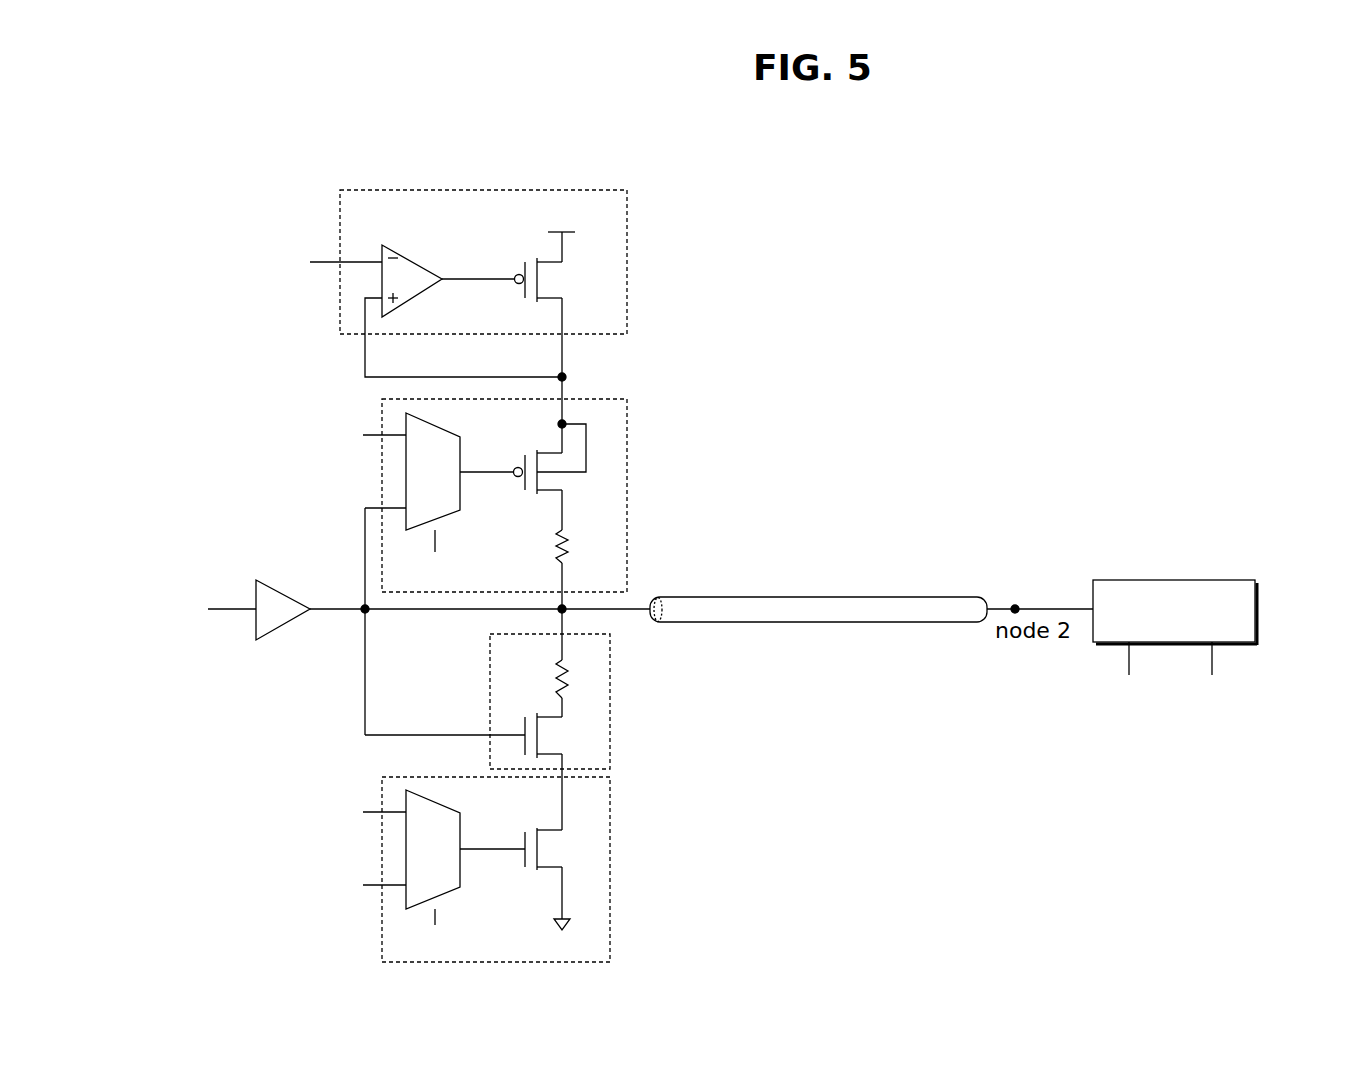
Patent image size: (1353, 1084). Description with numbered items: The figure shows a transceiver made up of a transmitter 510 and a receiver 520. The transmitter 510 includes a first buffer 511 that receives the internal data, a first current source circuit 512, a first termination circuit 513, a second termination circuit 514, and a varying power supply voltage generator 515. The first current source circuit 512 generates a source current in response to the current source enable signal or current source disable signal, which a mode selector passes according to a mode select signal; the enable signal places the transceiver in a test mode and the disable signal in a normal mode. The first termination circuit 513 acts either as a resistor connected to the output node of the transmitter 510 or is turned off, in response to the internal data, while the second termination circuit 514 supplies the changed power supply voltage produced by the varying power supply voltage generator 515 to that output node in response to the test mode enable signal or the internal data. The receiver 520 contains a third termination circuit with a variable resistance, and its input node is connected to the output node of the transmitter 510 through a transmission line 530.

The transmitter 510 is at (724, 163).
The first buffer 511 is at (275, 583).
The first current source circuit 512 is at (610, 820).
The first termination circuit 513 is at (610, 688).
The second termination circuit 514 is at (627, 443).
The varying power supply voltage generator 515 is at (627, 222).
The receiver 520 is at (1170, 580).
The transmission line 530 is at (765, 597).